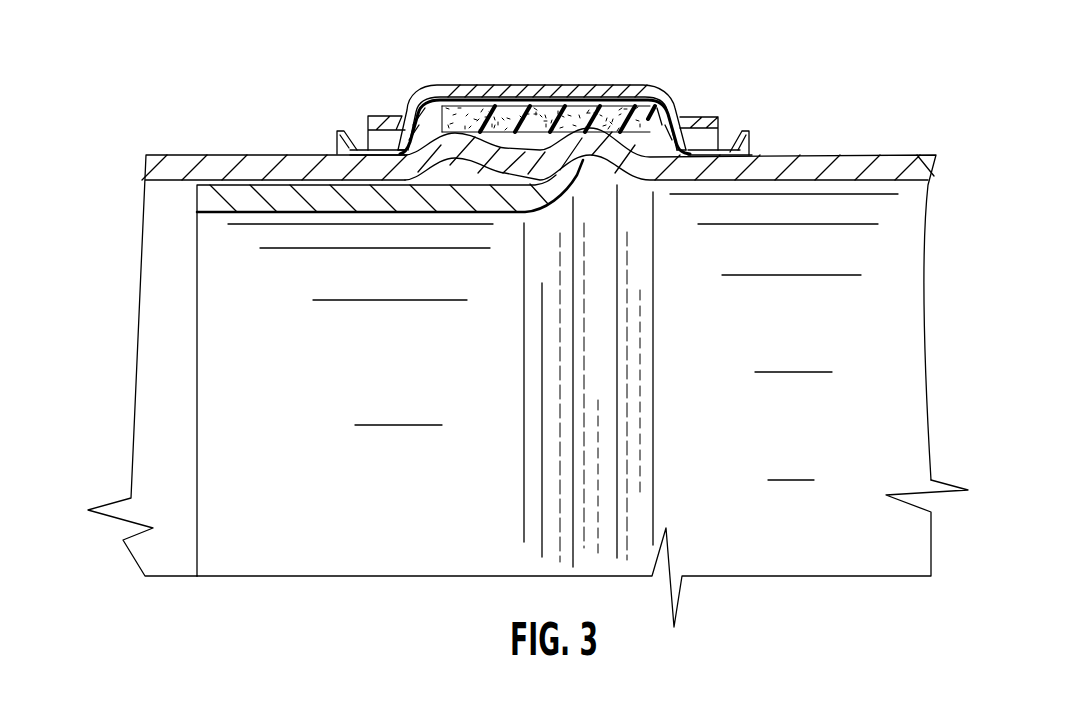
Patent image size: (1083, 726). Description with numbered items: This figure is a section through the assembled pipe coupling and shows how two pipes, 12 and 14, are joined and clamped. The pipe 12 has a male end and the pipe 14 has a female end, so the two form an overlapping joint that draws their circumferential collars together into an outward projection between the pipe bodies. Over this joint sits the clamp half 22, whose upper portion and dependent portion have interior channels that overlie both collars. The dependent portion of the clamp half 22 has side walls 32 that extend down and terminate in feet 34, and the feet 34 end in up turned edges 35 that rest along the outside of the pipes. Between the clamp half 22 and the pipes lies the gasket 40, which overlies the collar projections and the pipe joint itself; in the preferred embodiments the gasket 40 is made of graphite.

The pipe 12 is at (848, 155).
The pipe 14 is at (220, 155).
The clamp half 22 is at (496, 54).
The side walls 32 is at (367, 91).
The feet 34 is at (713, 142).
The up turned edges 35 is at (750, 143).
The gasket 40 is at (652, 120).